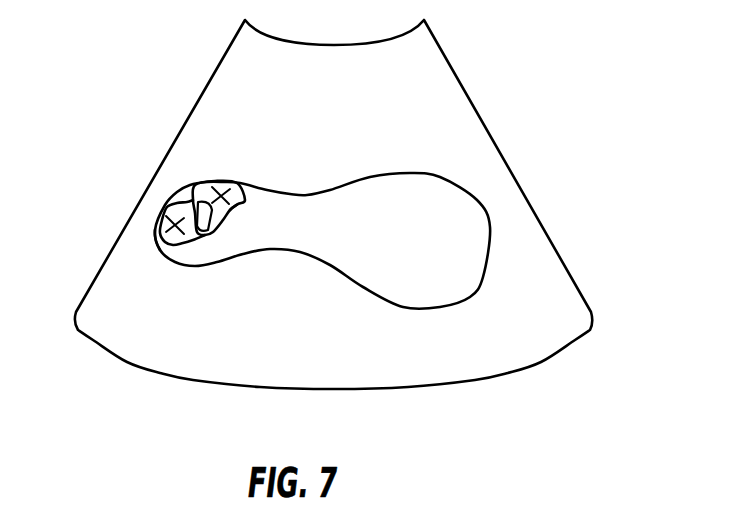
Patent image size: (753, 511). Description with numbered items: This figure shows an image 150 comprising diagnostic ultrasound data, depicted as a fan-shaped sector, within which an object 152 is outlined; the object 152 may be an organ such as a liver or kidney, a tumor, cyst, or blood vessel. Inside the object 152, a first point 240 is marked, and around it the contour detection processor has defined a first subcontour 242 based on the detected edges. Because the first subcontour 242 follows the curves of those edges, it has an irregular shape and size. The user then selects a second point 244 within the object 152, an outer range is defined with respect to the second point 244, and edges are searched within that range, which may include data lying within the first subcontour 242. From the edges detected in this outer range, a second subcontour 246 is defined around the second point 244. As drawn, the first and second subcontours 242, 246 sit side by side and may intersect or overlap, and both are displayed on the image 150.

The image 150 is at (461, 85).
The object 152 is at (477, 291).
The first point 240 is at (162, 215).
The first subcontour 242 is at (158, 234).
The second point 244 is at (217, 181).
The second subcontour 246 is at (236, 203).